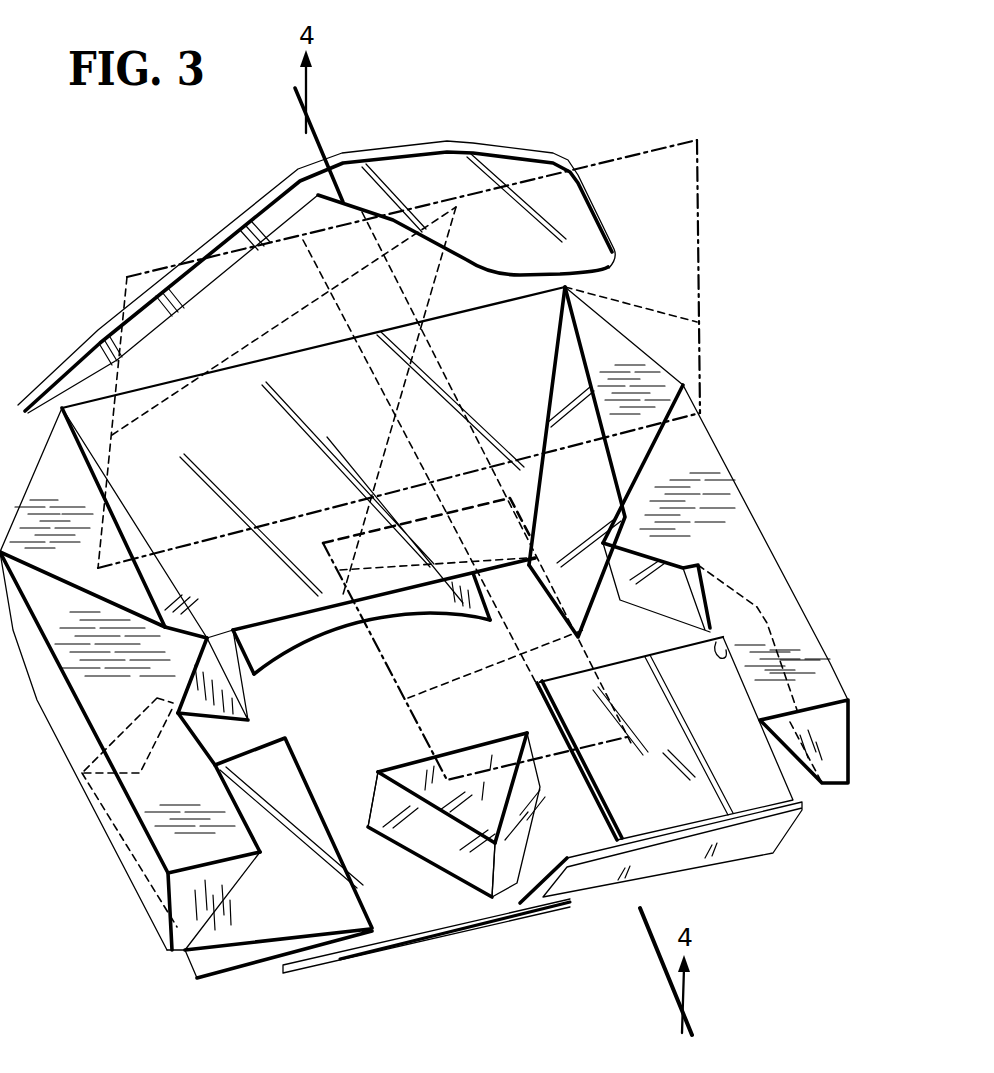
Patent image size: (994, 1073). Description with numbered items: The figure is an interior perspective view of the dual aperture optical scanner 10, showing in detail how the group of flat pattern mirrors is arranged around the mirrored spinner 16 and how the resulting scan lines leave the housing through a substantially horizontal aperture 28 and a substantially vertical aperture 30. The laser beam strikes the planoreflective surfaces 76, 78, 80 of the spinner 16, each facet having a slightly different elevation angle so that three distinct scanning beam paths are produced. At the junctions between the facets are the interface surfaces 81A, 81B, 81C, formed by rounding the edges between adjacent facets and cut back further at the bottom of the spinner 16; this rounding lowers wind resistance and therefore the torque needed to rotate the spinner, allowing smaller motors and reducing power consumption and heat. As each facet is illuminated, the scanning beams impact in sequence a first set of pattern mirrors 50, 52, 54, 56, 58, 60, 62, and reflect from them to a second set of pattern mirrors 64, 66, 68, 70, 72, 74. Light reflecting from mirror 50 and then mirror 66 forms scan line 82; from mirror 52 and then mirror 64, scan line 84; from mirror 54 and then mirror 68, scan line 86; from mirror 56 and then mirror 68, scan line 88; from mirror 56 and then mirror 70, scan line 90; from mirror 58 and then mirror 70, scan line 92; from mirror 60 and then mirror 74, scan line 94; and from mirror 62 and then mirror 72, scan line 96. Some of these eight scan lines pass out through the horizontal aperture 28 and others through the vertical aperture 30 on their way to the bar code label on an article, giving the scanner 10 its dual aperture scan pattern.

The dual aperture optical scanner 10 is at (560, 102).
The mirrored spinner 16 is at (442, 890).
The substantially horizontal aperture 28 is at (390, 673).
The substantially vertical aperture 30 is at (110, 457).
The pattern mirror 50 is at (718, 630).
The pattern mirror 52 is at (645, 560).
The pattern mirror 54 is at (578, 483).
The pattern mirror 56 is at (218, 562).
The pattern mirror 58 is at (243, 687).
The pattern mirror 60 is at (180, 718).
The pattern mirror 62 is at (247, 873).
The pattern mirror 64 is at (755, 797).
The pattern mirror 66 is at (648, 818).
The pattern mirror 68 is at (578, 212).
The pattern mirror 70 is at (213, 247).
The pattern mirror 72 is at (243, 947).
The pattern mirror 74 is at (347, 943).
The planoreflective surface 76 is at (527, 802).
The planoreflective surface 78 is at (428, 845).
The planoreflective surface 80 is at (460, 740).
The interface surface 81A is at (498, 887).
The interface surface 81B is at (533, 750).
The interface surface 81C is at (372, 797).
The scan line 82 is at (500, 600).
The scan line 84 is at (463, 560).
The scan line 86 is at (369, 370).
The scan line 88 is at (628, 300).
The scan line 90 is at (275, 318).
The scan line 92 is at (416, 334).
The scan line 94 is at (483, 670).
The scan line 96 is at (447, 643).